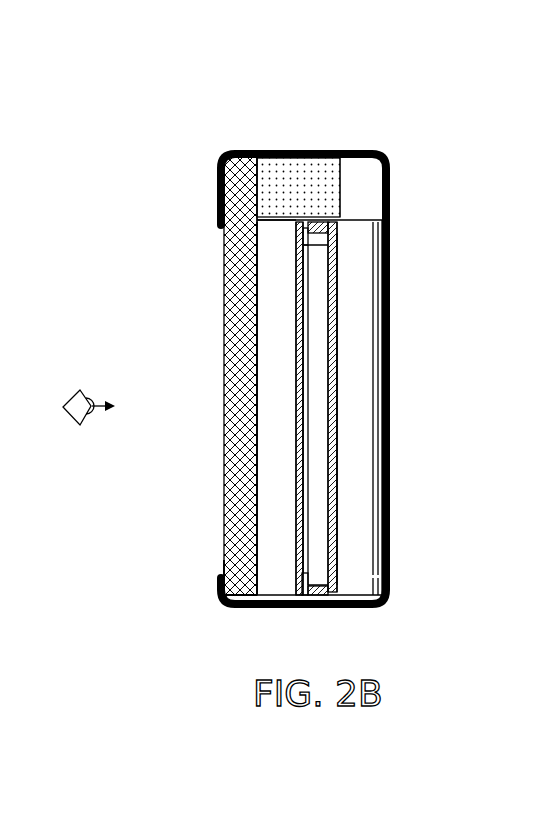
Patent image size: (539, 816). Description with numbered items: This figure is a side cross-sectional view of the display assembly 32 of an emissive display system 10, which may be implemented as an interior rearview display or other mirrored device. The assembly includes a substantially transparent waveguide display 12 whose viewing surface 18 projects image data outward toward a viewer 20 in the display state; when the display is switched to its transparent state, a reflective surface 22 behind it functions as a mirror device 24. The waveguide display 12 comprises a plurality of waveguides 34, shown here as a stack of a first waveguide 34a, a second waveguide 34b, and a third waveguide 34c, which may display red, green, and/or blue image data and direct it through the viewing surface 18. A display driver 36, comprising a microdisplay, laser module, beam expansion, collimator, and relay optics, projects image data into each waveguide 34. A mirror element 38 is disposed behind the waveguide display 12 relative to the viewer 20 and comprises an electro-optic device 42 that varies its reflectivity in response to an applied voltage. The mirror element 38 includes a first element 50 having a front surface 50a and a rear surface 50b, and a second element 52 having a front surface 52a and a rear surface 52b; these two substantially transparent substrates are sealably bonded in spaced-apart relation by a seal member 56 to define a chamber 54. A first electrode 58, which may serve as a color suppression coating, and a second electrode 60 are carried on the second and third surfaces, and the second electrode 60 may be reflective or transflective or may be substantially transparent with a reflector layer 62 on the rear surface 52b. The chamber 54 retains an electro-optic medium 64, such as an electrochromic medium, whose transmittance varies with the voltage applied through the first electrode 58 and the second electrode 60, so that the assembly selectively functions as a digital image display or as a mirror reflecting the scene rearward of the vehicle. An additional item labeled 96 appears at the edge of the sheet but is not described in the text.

The emissive display system 10 is at (248, 103).
The waveguide display 12 is at (203, 203).
The viewing surface 18 is at (223, 267).
The viewer 20 is at (72, 394).
The reflective surface 22 is at (330, 343).
The mirror element 38 is at (330, 343).
The mirror device 24 is at (281, 385).
The display assembly 32 is at (237, 152).
The waveguide 34 is at (228, 523).
The first waveguide 34a is at (222, 548).
The second waveguide 34b is at (222, 548).
The third waveguide 34c is at (222, 548).
The display driver 36 is at (308, 180).
The electro-optic device 42 is at (366, 192).
The first element 50 is at (283, 266).
The front surface of front element 50a is at (255, 290).
The rear surface of front element 50b is at (293, 305).
The second element 52 is at (350, 311).
The front surface of rear element 52a is at (337, 326).
The rear surface of rear element 52b is at (370, 360).
The chamber 54 is at (313, 377).
The seal member 56 is at (320, 230).
The first electrode 58 is at (305, 410).
The second electrode 60 is at (337, 432).
The reflector layer 62 is at (370, 486).
The electro-optic medium 64 is at (315, 507).
The element 96 is at (9, 602).